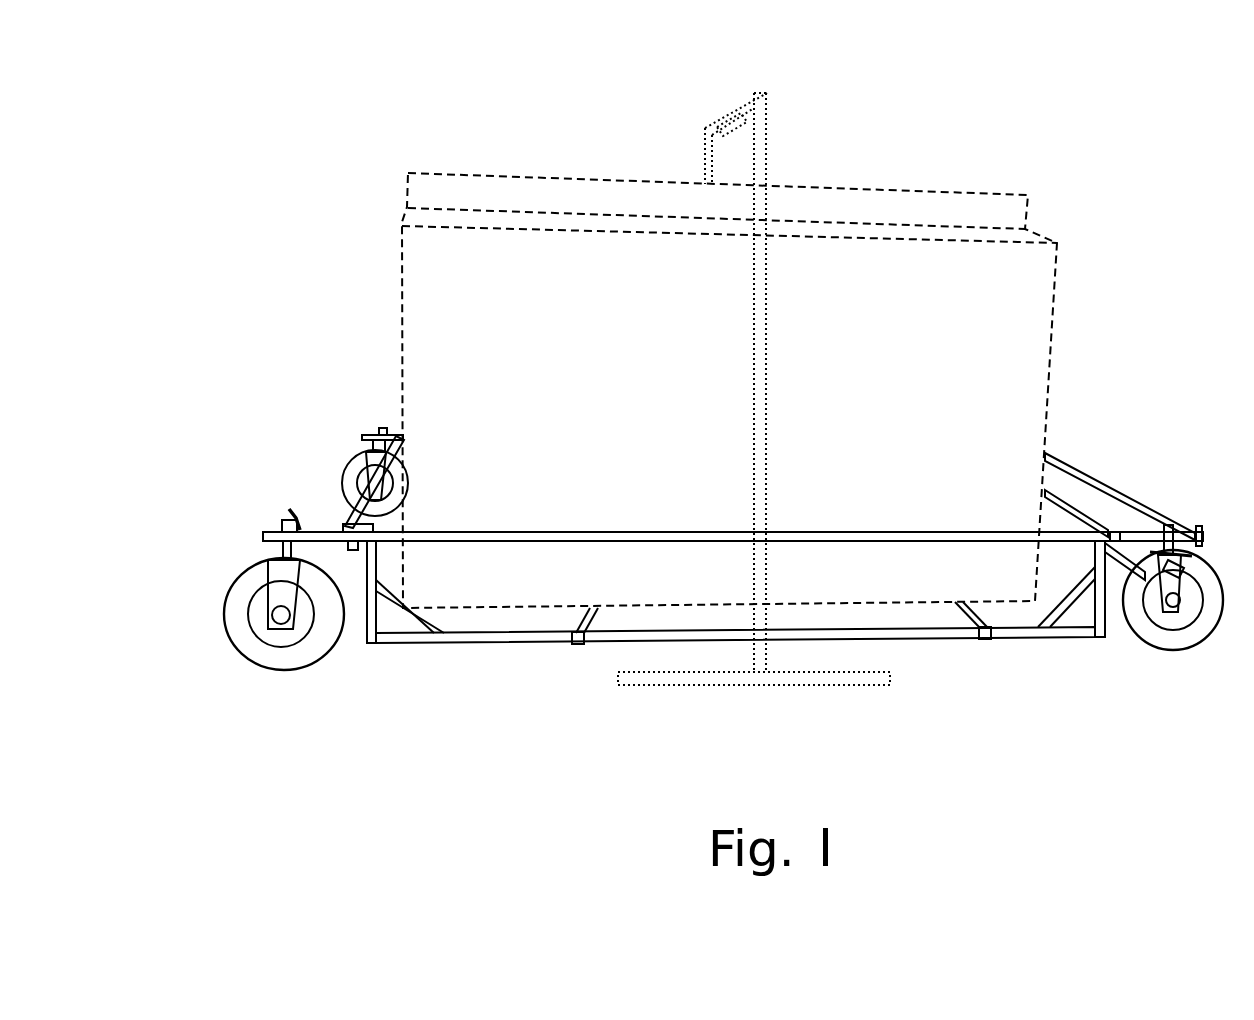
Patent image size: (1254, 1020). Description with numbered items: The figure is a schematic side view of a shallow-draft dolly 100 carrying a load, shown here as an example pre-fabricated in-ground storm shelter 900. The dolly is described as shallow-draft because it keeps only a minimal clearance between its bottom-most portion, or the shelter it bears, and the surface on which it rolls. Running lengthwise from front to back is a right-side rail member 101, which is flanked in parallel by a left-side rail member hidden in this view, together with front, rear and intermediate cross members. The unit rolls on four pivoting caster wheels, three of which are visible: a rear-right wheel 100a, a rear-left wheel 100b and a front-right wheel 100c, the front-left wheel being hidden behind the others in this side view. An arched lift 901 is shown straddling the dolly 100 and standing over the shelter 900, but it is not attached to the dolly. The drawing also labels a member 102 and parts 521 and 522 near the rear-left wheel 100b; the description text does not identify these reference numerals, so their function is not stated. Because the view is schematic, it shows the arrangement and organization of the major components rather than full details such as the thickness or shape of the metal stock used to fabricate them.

The shallow-draft dolly 100 is at (1168, 120).
The right-side rail member 101 is at (414, 672).
The hitch arm 102 is at (1128, 492).
The rear-right wheel 100a is at (256, 662).
The rear-left wheel 100b is at (360, 470).
The front-right wheel 100c is at (1170, 649).
The mounting plate 521 is at (345, 525).
The jack bar 522 is at (375, 497).
The shelter 900 is at (1036, 231).
The arched lift 901 is at (770, 131).